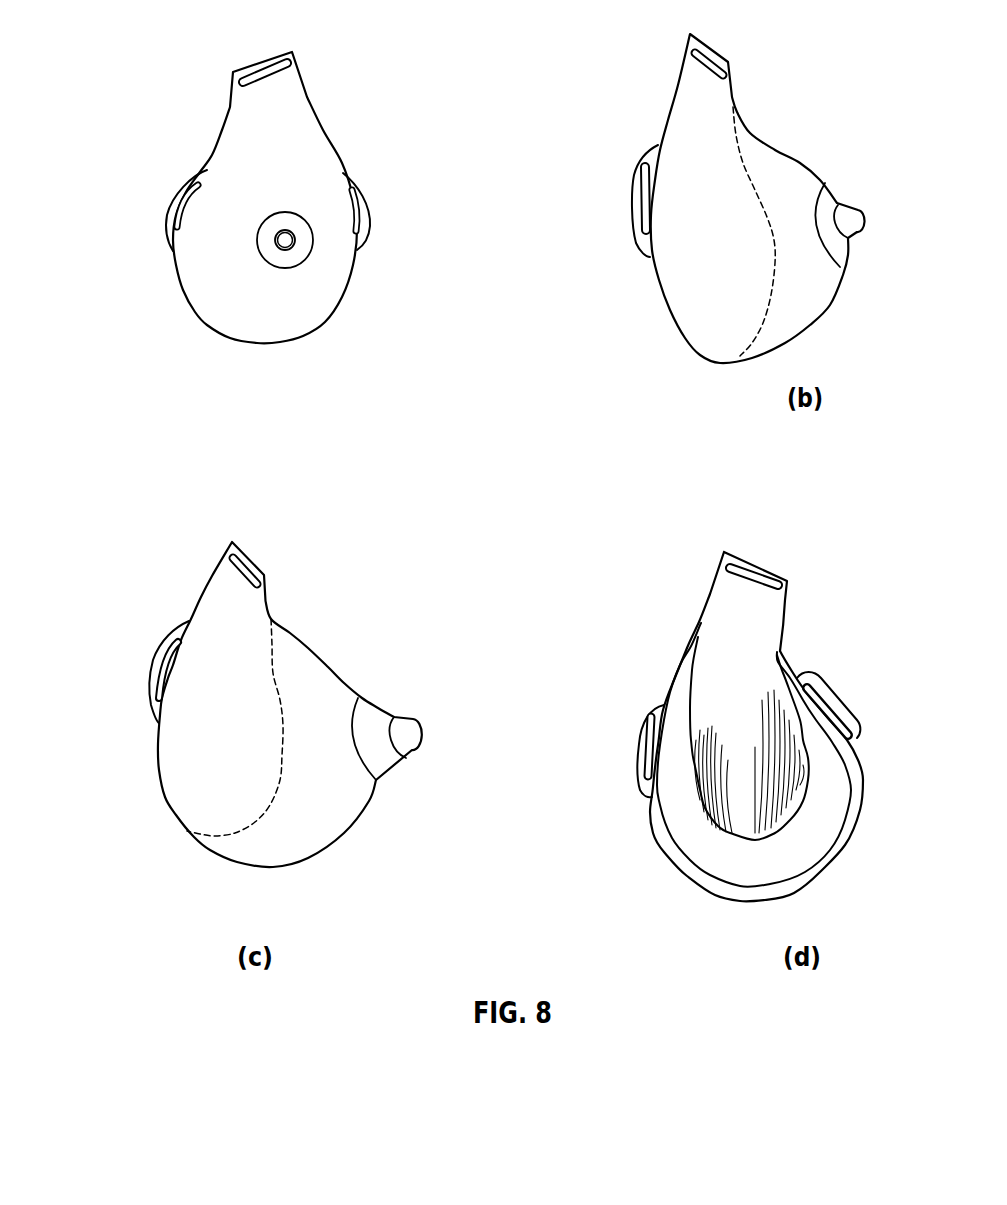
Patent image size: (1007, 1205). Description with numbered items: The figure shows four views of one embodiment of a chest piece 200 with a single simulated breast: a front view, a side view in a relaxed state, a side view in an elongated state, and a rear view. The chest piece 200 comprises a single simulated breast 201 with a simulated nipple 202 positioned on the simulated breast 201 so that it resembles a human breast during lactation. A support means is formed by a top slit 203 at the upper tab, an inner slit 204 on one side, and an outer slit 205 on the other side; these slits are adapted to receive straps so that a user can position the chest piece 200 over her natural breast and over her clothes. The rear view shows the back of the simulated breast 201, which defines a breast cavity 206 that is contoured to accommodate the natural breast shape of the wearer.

The chest piece 200 is at (129, 69).
The simulated breast 201 is at (278, 162).
The simulated nipple 202 is at (293, 240).
The top slit 203 is at (253, 60).
The inner slit 204 is at (168, 207).
The outer slit 205 is at (345, 173).
The breast cavity 206 is at (723, 813).